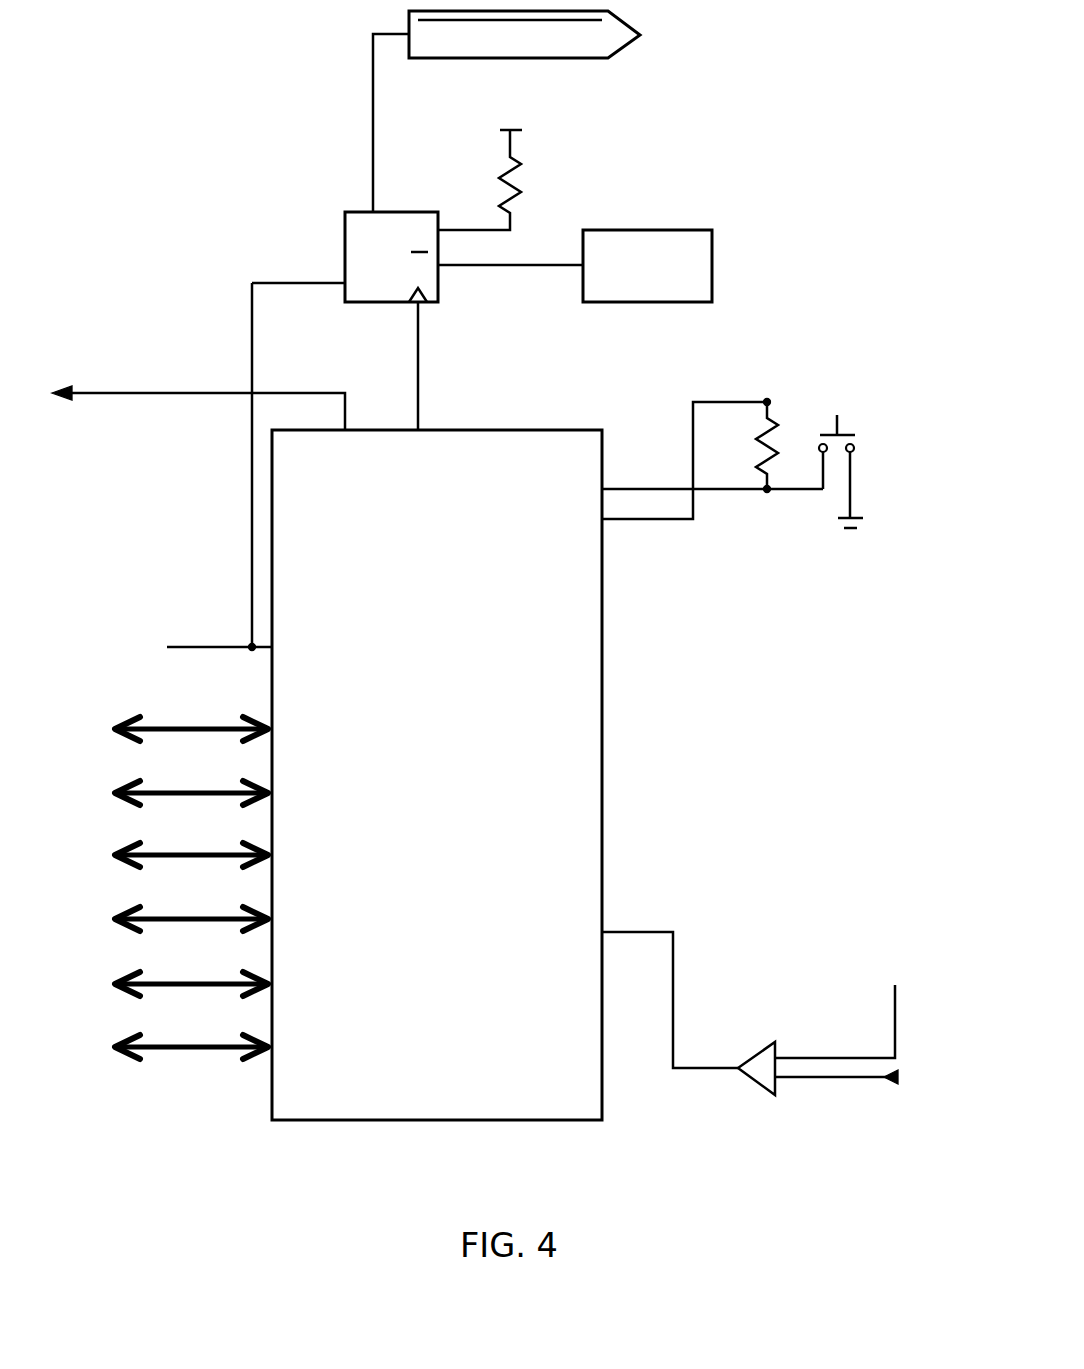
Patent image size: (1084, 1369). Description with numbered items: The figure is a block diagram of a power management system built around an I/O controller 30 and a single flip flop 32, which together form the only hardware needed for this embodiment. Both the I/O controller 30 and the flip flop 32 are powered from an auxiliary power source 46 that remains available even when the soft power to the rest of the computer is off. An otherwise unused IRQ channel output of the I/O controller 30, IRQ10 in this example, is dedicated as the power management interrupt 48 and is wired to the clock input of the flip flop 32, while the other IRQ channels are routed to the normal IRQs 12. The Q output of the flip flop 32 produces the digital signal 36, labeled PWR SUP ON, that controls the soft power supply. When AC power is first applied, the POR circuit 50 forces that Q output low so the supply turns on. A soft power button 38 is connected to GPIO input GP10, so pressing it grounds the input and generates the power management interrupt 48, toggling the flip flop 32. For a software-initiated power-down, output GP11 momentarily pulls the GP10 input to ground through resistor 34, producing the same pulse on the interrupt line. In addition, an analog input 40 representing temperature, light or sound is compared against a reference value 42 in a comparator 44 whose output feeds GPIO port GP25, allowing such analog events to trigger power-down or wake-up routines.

The normal IRQ line 12 is at (205, 397).
The I/O controller 30 is at (610, 448).
The flip flop 32 is at (357, 211).
The resistor 34 is at (757, 462).
The digital signal 36 is at (368, 83).
The power button 38 is at (860, 437).
The analog input 40 is at (848, 1077).
The reference value 42 is at (890, 1037).
The comparator 44 is at (758, 1050).
The auxiliary power source 46 is at (233, 650).
The power management interrupt 48 is at (415, 330).
The Power-On-Reset circuit 50 is at (628, 230).